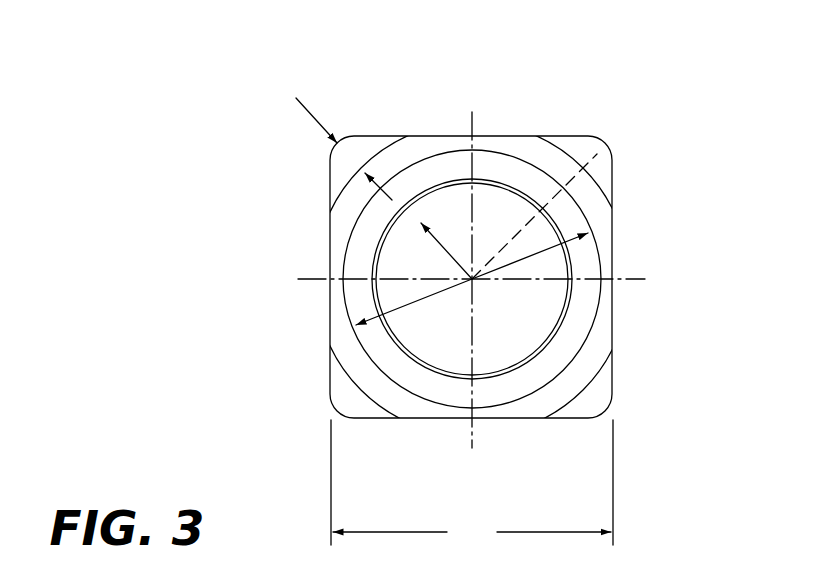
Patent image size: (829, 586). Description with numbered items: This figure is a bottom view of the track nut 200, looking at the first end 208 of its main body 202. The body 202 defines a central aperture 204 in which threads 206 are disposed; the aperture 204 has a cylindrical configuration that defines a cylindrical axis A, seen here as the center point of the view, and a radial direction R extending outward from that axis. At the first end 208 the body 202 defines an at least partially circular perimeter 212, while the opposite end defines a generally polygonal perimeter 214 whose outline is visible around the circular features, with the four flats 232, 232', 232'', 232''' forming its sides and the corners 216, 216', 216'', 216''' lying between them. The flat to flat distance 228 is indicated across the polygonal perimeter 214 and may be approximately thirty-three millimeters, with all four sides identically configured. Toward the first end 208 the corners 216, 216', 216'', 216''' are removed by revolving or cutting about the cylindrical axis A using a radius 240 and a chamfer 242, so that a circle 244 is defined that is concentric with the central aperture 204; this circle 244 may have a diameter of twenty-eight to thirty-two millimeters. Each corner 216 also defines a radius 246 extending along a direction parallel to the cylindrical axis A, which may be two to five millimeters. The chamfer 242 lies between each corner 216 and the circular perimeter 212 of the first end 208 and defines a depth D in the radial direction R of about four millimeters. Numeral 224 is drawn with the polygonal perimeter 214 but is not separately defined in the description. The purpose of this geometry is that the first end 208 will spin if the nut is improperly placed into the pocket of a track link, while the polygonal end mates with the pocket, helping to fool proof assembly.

The track nut 200 is at (561, 224).
The main body 202 is at (471, 280).
The central aperture 204 is at (417, 204).
The threads 206 is at (437, 183).
The first end 208 is at (584, 306).
The circular perimeter 212 is at (606, 371).
The polygonal perimeter 214 is at (551, 277).
The cover 224 is at (612, 258).
The corners 216 is at (361, 454).
The corners 216' is at (570, 454).
The corners 216'' is at (680, 123).
The corners 216''' is at (275, 119).
The flat to flat distance 228 is at (472, 482).
The flat 232 is at (466, 454).
The flat 232' is at (668, 398).
The flat 232'' is at (531, 90).
The flat 232''' is at (280, 210).
The radius 240 is at (592, 183).
The chamfer 242 is at (587, 137).
The circle 244 is at (600, 228).
The radius 246 is at (595, 407).
The radial direction R is at (445, 246).
The cylindrical axis A is at (472, 279).
The depth D is at (314, 99).